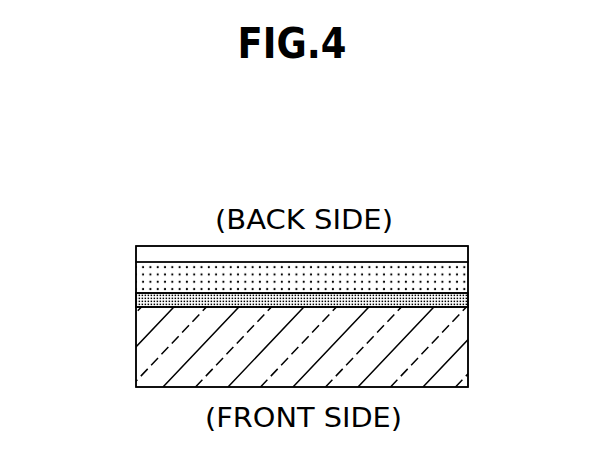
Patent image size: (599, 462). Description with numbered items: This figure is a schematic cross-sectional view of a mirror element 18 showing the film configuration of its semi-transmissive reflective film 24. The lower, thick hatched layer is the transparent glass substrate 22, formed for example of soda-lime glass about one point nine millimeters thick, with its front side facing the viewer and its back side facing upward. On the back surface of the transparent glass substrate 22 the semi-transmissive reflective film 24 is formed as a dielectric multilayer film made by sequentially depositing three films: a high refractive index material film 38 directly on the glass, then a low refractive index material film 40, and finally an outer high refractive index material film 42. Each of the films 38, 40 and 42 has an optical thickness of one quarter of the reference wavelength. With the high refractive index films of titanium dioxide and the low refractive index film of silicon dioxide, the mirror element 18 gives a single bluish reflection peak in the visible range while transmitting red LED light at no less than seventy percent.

The mirror element 18 is at (417, 160).
The transparent glass substrate 22 is at (458, 365).
The semi-transmissive reflective film 24 is at (298, 296).
The high refractive index material film 38 is at (465, 302).
The low refractive index material film 40 is at (458, 282).
The high refractive index material film 42 is at (463, 257).